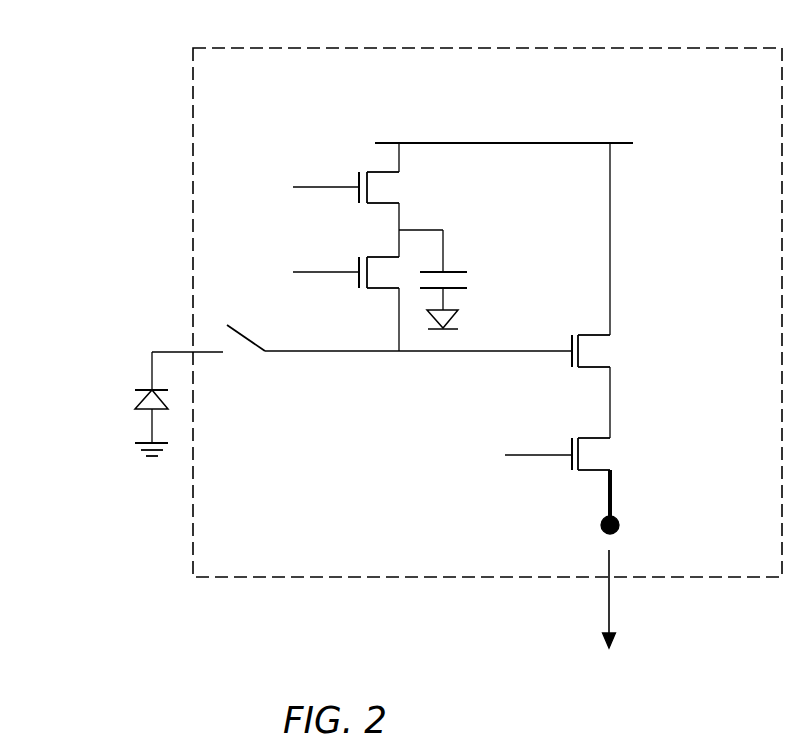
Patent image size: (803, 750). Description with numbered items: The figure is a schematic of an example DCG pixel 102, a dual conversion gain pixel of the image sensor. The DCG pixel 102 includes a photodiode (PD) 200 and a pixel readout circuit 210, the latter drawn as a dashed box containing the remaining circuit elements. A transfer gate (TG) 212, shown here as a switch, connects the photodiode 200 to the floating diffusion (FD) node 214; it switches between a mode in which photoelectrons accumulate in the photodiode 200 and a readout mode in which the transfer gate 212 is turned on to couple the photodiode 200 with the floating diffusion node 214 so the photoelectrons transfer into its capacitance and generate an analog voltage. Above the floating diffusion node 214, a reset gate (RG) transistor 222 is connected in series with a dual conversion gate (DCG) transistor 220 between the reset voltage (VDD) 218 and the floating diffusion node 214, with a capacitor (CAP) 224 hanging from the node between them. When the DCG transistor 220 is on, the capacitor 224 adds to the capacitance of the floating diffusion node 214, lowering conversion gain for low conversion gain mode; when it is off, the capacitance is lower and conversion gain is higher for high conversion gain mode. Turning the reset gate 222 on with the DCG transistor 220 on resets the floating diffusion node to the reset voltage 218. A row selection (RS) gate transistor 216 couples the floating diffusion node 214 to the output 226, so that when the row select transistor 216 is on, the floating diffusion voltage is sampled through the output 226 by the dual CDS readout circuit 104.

The DCG pixel 102 is at (143, 113).
The pixel readout circuit 210 is at (615, 79).
The reset voltage (VDD) 218 is at (504, 119).
The reset gate (RG) transistor 222 is at (321, 168).
The dual conversion gate (DCG) transistor 220 is at (318, 261).
The capacitor (CAP) 224 is at (492, 299).
The photodiode (PD) 200 is at (125, 404).
The transfer gate (TG) transistor 212 is at (391, 359).
The floating diffusion (FD) node 214 is at (637, 351).
The row selection (RS) gate transistor 216 is at (603, 454).
The output 226 is at (667, 511).
The dual CDS readout circuit 104 is at (613, 643).